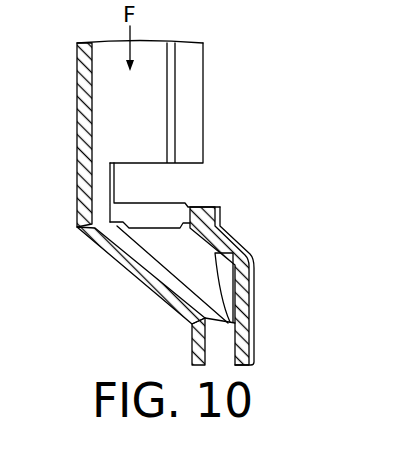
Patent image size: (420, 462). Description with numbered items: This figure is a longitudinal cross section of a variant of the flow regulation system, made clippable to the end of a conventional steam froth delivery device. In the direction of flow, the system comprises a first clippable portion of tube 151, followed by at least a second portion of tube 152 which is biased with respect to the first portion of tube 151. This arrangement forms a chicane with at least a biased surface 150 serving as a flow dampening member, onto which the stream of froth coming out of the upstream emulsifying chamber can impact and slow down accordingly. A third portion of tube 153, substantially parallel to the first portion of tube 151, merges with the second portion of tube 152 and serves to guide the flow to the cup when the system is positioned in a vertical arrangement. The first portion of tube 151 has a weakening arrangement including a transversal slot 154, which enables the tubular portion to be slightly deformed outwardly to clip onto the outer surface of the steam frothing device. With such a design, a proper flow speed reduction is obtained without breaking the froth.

The biased surface 150 is at (70, 222).
The first clippable portion of tube 151 is at (263, 42).
The second portion of tube 152 is at (121, 276).
The third portion of tube 153 is at (267, 252).
The transversal slot 154 is at (189, 184).